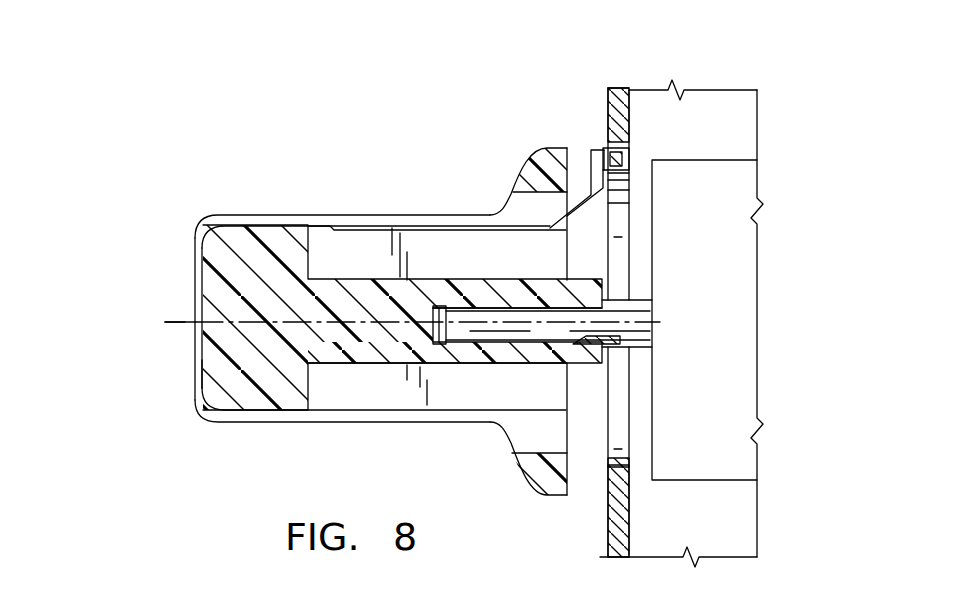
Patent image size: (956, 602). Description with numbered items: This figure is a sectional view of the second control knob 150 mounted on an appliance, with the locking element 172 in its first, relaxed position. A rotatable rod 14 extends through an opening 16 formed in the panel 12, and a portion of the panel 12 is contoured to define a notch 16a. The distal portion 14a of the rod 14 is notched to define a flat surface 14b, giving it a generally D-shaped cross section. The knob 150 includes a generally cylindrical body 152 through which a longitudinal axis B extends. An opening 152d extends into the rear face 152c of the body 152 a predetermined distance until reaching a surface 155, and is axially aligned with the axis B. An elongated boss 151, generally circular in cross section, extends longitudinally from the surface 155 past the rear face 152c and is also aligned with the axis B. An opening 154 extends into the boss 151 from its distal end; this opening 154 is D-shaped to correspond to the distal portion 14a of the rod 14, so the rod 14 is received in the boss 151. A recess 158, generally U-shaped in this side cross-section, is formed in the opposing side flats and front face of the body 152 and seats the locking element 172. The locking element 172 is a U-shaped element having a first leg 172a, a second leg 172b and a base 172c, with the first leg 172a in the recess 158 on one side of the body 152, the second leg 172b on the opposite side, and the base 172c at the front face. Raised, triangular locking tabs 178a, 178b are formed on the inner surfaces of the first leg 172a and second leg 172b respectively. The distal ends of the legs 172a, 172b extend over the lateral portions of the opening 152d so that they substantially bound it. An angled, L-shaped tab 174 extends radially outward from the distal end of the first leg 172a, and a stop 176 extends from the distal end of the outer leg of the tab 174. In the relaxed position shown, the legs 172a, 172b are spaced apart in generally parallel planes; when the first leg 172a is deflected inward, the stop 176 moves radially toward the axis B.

The control knob 150 is at (285, 136).
The locking element 172 is at (385, 210).
The first leg 172a is at (436, 214).
The second leg 172b is at (432, 425).
The base 172c is at (197, 280).
The recess 158 is at (193, 372).
The longitudinal axis B is at (182, 322).
The surface 155 is at (310, 382).
The raised locking tab 178a is at (316, 228).
The raised locking tab 178b is at (311, 410).
The flat surface 14b is at (507, 307).
The elongated boss 151 is at (468, 365).
The opening 154 is at (573, 342).
The distal portion 14a is at (523, 345).
The body 152 is at (528, 146).
The rear face 152c is at (568, 465).
The opening 152d is at (550, 253).
The tab 174 is at (592, 202).
The notch 16a is at (626, 152).
The stop 176 is at (615, 158).
The rotatable rod 14 is at (646, 290).
The opening 16 is at (622, 452).
The panel 12 is at (607, 110).